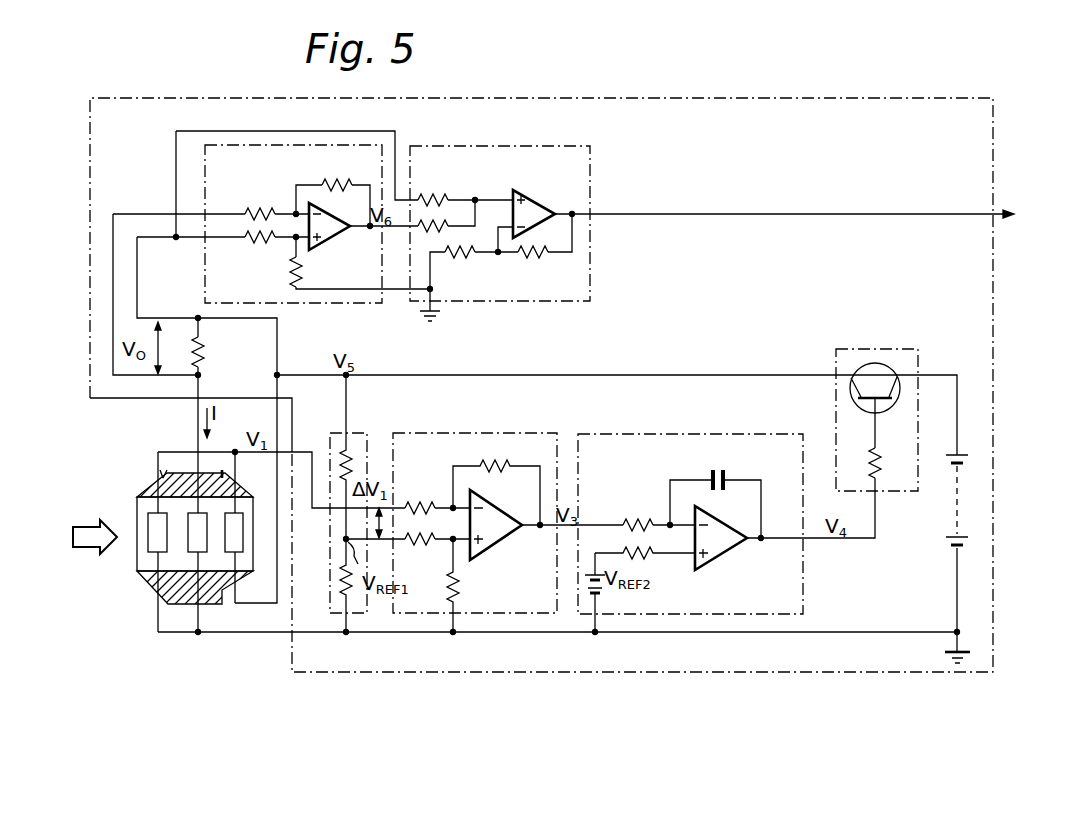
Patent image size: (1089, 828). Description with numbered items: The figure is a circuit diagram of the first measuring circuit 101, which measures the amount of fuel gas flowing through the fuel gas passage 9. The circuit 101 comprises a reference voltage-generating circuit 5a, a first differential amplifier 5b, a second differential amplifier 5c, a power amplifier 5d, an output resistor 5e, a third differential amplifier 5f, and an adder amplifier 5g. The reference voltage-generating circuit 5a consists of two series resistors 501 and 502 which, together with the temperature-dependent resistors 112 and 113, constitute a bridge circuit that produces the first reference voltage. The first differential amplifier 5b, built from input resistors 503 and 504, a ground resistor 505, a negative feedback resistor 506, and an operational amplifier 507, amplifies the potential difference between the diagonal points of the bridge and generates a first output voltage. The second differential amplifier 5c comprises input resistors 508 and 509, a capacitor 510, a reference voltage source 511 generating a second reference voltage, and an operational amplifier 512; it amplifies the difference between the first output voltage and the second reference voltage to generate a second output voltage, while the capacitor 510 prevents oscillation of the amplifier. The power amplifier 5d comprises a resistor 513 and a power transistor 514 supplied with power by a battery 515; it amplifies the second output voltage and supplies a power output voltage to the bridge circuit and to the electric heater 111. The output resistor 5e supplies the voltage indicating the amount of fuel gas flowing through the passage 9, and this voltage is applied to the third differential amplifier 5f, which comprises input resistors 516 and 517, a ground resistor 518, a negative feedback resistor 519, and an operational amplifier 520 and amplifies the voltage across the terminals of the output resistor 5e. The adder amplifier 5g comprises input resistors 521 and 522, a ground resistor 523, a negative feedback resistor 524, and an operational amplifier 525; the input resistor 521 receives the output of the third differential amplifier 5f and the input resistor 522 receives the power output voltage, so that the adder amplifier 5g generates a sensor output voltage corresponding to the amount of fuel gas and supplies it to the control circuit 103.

The first measuring circuit 101 is at (743, 97).
The control circuit 103 is at (1032, 221).
The reference voltage-generating circuit 5a is at (360, 433).
The first differential amplifier 5b is at (474, 433).
The second differential amplifier 5c is at (688, 434).
The power amplifier 5d is at (894, 349).
The output resistor 5e is at (204, 354).
The third differential amplifier 5f is at (262, 146).
The adder amplifier 5g is at (534, 146).
The fuel gas passage 9 is at (136, 578).
The electric heater 111 is at (185, 550).
The temperature-dependent resistor 112 is at (242, 549).
The temperature-dependent resistor 113 is at (148, 524).
The resistor 501 is at (342, 452).
The resistor 502 is at (338, 586).
The input resistor 503 is at (422, 507).
The input resistor 504 is at (422, 539).
The ground resistor 505 is at (460, 582).
The negative feedback resistor 506 is at (496, 468).
The operational amplifier 507 is at (494, 543).
The input resistor 508 is at (638, 515).
The input resistor 509 is at (649, 558).
The capacitor 510 is at (729, 477).
The reference voltage source 511 is at (581, 579).
The operational amplifier 512 is at (730, 556).
The resistor 513 is at (882, 475).
The power transistor 514 is at (894, 374).
The battery 515 is at (968, 491).
The input resistor 516 is at (263, 213).
The input resistor 517 is at (262, 240).
The ground resistor 518 is at (300, 269).
The negative feedback resistor 519 is at (336, 184).
The operational amplifier 520 is at (336, 236).
The input resistor 521 is at (433, 231).
The input resistor 522 is at (434, 199).
The ground resistor 523 is at (462, 258).
The negative feedback resistor 524 is at (535, 256).
The operational amplifier 525 is at (542, 202).